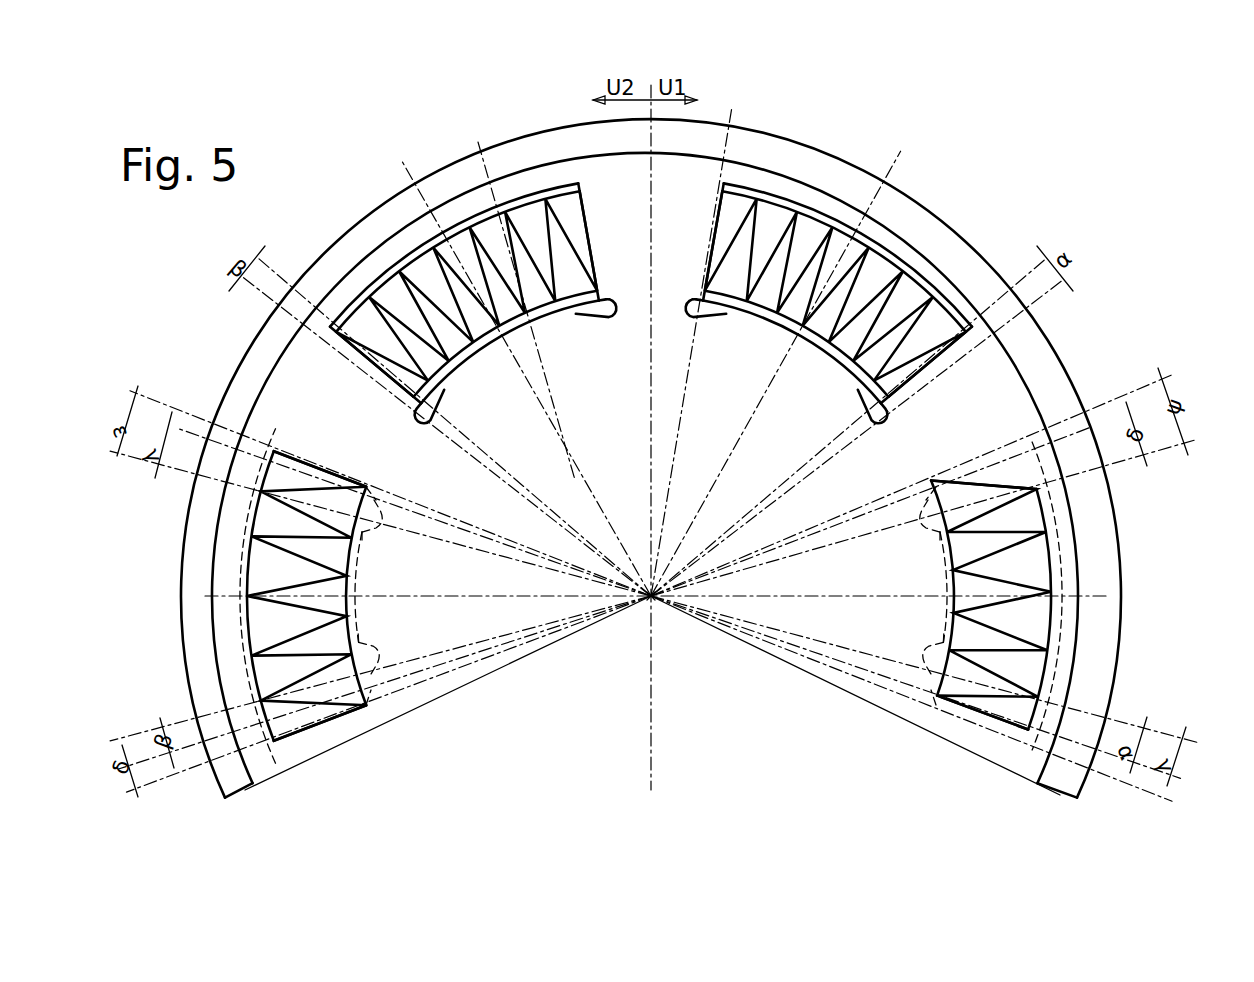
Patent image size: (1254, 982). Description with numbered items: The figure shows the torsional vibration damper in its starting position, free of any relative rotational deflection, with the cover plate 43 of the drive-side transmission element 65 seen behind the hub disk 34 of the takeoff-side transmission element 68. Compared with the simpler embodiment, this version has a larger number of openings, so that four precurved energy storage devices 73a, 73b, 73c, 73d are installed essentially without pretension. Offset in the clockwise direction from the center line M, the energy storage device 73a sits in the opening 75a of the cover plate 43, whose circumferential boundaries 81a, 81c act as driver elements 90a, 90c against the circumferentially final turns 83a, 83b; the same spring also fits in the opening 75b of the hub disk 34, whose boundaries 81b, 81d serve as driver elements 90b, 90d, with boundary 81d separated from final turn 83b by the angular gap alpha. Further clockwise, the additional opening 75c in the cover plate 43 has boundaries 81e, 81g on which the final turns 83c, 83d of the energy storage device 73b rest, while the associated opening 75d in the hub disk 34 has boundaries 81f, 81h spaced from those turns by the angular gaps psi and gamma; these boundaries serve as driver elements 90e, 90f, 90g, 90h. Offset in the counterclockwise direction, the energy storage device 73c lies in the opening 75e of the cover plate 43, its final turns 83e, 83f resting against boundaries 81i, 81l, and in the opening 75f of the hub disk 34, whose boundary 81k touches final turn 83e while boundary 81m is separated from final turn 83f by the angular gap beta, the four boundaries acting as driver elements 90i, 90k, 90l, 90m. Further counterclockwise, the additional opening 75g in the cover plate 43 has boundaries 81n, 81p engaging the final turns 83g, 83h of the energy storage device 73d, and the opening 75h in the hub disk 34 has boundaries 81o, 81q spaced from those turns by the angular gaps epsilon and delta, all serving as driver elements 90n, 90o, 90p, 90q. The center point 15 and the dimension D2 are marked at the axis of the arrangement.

The center axis 15 is at (646, 601).
The hub disk 34 is at (262, 388).
The cover plate 43 is at (236, 372).
The drive-side transmission element 65 is at (1025, 375).
The takeoff-side transmission element 68 is at (1050, 340).
The energy storage device 73a is at (812, 262).
The energy storage device 73b is at (1062, 618).
The energy storage device 73c is at (528, 290).
The energy storage device 73d is at (335, 612).
The opening 75a is at (905, 280).
The opening 75b is at (878, 200).
The opening 75c is at (1055, 600).
The opening 75d is at (1050, 553).
The opening 75e is at (425, 240).
The opening 75f is at (365, 295).
The opening 75g is at (360, 560).
The opening 75h is at (355, 515).
The circumferential boundary 81a is at (798, 215).
The circumferential boundary 81b is at (722, 200).
The circumferential boundary 81c is at (1020, 300).
The circumferential boundary 81d is at (1025, 312).
The circumferential boundary 81e is at (1043, 513).
The circumferential boundary 81f is at (1045, 480).
The circumferential boundary 81g is at (1035, 665).
The circumferential boundary 81h is at (1085, 765).
The circumferential boundary 81i is at (513, 296).
The circumferential boundary 81k is at (418, 185).
The circumferential boundary 81l is at (300, 285).
The circumferential boundary 81m is at (275, 295).
The circumferential boundary 81n is at (215, 422).
The circumferential boundary 81o is at (196, 420).
The circumferential boundary 81p is at (248, 790).
The circumferential boundary 81q is at (285, 772).
The circumferentially final turn 83a is at (718, 192).
The circumferentially final turn 83b is at (950, 360).
The circumferentially final turn 83c is at (975, 485).
The circumferentially final turn 83d is at (985, 712).
The circumferentially final turn 83e is at (588, 248).
The circumferentially final turn 83f is at (380, 370).
The circumferentially final turn 83g is at (340, 472).
The circumferentially final turn 83h is at (330, 720).
The driver element 90a is at (707, 316).
The driver element 90b is at (725, 272).
The driver element 90c is at (866, 392).
The driver element 90d is at (880, 427).
The driver element 90e is at (928, 480).
The driver element 90f is at (992, 482).
The driver element 90g is at (935, 690).
The driver element 90h is at (940, 705).
The driver element 90i is at (600, 312).
The driver element 90k is at (592, 298).
The driver element 90l is at (428, 408).
The driver element 90m is at (335, 350).
The driver element 90n is at (340, 480).
The driver element 90o is at (370, 488).
The driver element 90p is at (372, 708).
The driver element 90q is at (340, 740).
The center line M is at (638, 452).
The diameter D2 is at (655, 600).